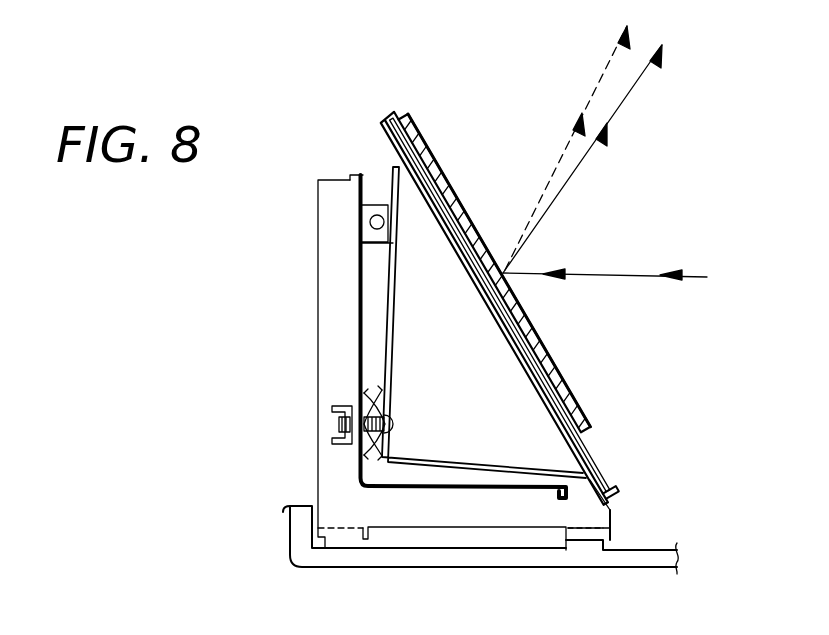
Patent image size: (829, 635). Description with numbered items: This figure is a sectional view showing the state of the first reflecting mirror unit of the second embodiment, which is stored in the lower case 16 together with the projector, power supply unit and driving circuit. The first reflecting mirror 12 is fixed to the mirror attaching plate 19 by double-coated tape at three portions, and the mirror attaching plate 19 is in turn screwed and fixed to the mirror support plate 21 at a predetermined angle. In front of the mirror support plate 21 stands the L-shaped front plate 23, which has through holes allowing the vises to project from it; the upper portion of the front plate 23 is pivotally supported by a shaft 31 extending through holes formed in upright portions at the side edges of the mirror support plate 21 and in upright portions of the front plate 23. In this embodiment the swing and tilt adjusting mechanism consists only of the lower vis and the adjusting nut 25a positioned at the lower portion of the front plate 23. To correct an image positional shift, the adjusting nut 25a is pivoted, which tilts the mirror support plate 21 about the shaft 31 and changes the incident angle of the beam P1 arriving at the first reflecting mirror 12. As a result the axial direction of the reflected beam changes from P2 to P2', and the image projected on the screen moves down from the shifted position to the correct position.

The first reflecting mirror 12 is at (558, 388).
The lower case 16 is at (381, 558).
The mirror attaching plate 19 is at (595, 474).
The mirror support plate 21 is at (388, 297).
The L-shaped front plate 23 is at (356, 471).
The adjusting nut 25a is at (346, 441).
The shaft 31 is at (370, 219).
The incident beam P1 is at (633, 272).
The reflected beam axial direction P2 is at (567, 148).
The adjusted reflected beam axial direction P2' is at (623, 159).